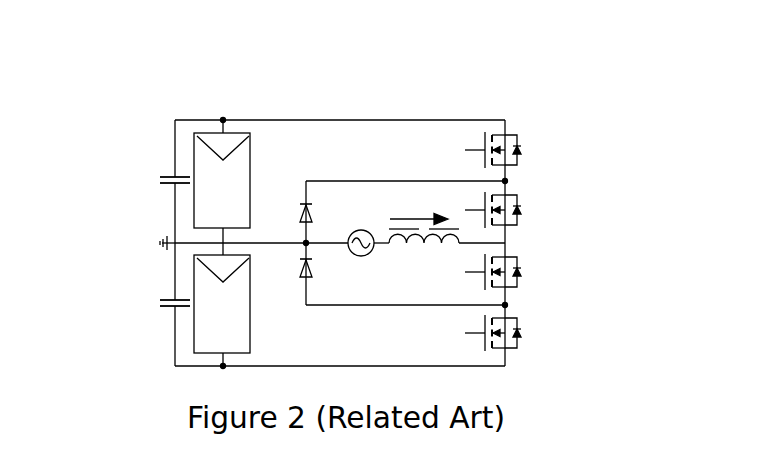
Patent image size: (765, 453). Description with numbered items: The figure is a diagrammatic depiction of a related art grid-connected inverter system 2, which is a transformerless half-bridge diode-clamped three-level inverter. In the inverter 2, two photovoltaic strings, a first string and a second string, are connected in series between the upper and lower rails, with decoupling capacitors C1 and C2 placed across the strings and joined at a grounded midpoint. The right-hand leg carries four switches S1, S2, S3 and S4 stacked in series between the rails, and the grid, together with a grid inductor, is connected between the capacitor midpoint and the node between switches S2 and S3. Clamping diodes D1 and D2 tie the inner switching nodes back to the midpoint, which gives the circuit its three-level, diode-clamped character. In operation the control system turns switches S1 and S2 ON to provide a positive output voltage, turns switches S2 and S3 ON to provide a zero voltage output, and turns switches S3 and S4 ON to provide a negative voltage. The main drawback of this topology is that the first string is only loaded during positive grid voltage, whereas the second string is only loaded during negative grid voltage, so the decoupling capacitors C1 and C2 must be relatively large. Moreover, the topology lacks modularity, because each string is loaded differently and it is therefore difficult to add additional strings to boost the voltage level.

The grid-connected inverter system 2 is at (90, 91).
The decoupling capacitor C1 is at (164, 170).
The decoupling capacitor C2 is at (164, 315).
The clamping diode D1 is at (291, 217).
The clamping diode D2 is at (291, 274).
The switch S1 is at (509, 150).
The switch S2 is at (509, 210).
The switch S3 is at (509, 272).
The switch S4 is at (509, 333).